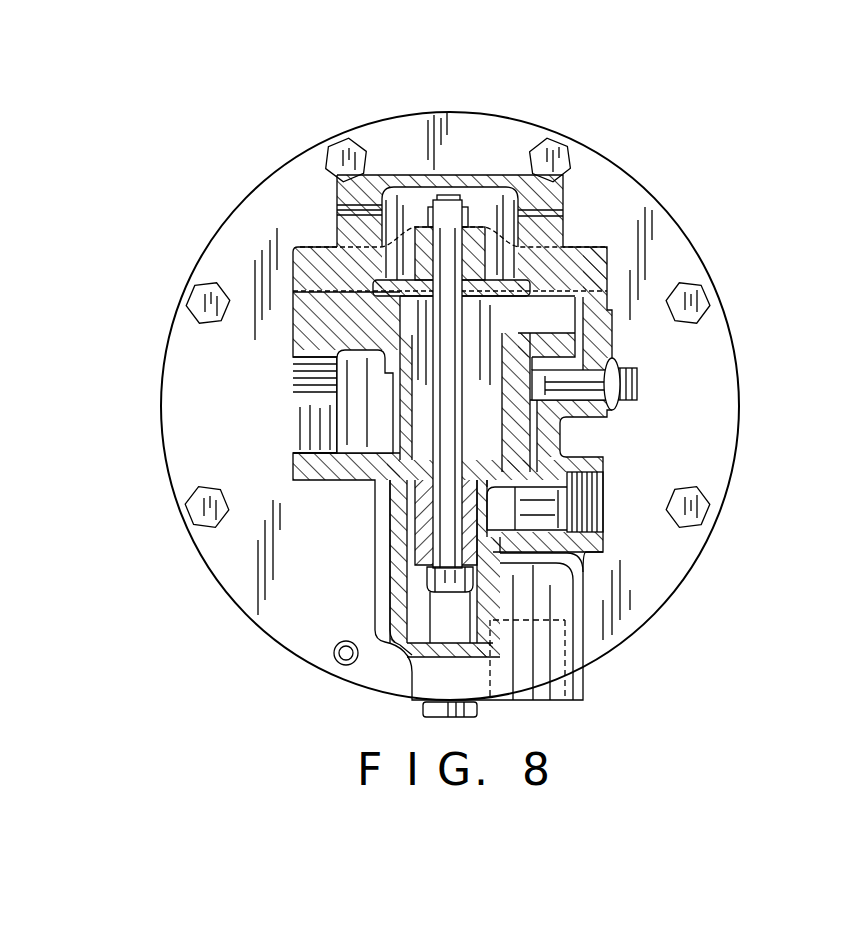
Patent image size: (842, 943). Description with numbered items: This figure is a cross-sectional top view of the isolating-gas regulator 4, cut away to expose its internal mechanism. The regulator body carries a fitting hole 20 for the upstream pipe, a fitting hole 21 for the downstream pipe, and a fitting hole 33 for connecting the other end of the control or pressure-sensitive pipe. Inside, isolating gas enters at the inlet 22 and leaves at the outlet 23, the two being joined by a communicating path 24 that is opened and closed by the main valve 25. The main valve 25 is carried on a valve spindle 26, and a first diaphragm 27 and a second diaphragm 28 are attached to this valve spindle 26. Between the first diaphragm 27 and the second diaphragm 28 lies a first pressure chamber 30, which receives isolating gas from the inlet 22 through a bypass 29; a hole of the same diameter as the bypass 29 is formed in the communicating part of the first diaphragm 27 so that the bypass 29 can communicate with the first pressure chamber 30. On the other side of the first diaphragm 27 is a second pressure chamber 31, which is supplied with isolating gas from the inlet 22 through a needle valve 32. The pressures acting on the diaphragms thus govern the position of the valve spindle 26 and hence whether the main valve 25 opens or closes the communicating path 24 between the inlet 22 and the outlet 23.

The isolating-gas regulator 4 is at (730, 292).
The fitting hole 20 is at (605, 540).
The fitting hole 21 is at (295, 370).
The inlet 22 is at (560, 458).
The outlet 23 is at (307, 392).
The communicating path 24 is at (393, 483).
The main valve 25 is at (383, 572).
The valve spindle 26 is at (445, 408).
The first diaphragm 27 is at (583, 318).
The second diaphragm 28 is at (503, 210).
The bypass 29 is at (585, 342).
The first pressure chamber 30 is at (381, 246).
The second pressure chamber 31 is at (543, 318).
The needle valve 32 is at (640, 372).
The fitting hole 33 is at (583, 675).